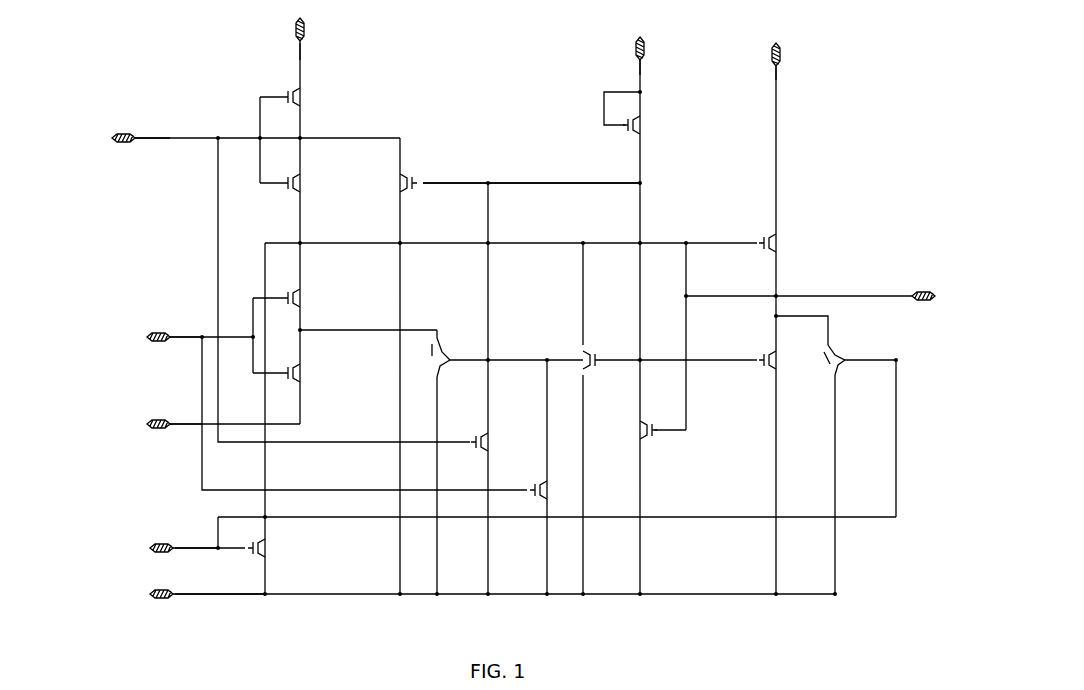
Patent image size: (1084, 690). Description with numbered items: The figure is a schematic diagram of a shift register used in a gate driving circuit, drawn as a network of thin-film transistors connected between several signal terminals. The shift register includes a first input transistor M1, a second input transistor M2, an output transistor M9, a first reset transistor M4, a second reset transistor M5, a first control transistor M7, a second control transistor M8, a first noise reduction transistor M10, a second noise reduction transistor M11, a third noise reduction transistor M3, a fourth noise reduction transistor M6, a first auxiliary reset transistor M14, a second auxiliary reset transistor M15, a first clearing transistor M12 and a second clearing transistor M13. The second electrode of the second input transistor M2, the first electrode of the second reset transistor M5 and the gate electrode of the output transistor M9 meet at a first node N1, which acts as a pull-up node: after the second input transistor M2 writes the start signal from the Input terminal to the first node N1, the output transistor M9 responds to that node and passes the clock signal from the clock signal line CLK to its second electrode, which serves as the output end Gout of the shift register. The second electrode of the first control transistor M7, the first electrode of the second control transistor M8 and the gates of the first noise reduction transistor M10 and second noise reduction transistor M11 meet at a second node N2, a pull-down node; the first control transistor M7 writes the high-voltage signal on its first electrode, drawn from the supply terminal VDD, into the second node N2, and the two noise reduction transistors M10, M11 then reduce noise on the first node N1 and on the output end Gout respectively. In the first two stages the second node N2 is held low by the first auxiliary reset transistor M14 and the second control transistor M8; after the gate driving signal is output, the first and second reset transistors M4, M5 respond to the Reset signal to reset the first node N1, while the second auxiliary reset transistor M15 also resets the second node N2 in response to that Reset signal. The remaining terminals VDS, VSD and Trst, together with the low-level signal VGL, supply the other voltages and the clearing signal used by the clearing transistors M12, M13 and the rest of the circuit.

The first input transistor M1 is at (309, 100).
The second input transistor M2 is at (309, 186).
The third noise reduction transistor M3 is at (425, 171).
The first reset transistor M4 is at (309, 376).
The second reset transistor M5 is at (309, 301).
The fourth noise reduction transistor M6 is at (453, 352).
The first control transistor M7 is at (652, 128).
The second control transistor M8 is at (666, 447).
The output transistor M9 is at (788, 246).
The first noise reduction transistor M10 is at (562, 348).
The second noise reduction transistor M11 is at (749, 380).
The first clearing transistor M12 is at (287, 550).
The second clearing transistor M13 is at (857, 375).
The first auxiliary reset transistor M14 is at (504, 445).
The second auxiliary reset transistor M15 is at (563, 493).
The first node N1 is at (511, 233).
The second node N2 is at (531, 169).
The first power supply terminal VDS is at (302, 30).
The second power supply terminal VDD is at (642, 39).
The clock signal line CLK is at (776, 46).
The start signal Input is at (107, 143).
The reset signal Reset is at (145, 342).
The third power supply terminal VSD is at (147, 429).
The total reset signal terminal Trst is at (156, 551).
The low-level signal VGL is at (176, 597).
The output end Gout is at (821, 281).